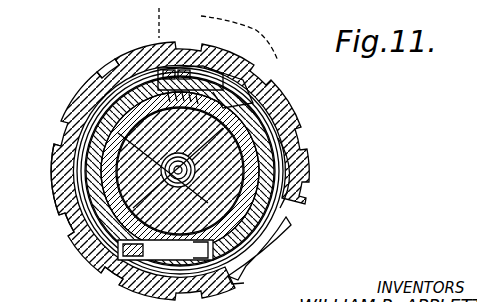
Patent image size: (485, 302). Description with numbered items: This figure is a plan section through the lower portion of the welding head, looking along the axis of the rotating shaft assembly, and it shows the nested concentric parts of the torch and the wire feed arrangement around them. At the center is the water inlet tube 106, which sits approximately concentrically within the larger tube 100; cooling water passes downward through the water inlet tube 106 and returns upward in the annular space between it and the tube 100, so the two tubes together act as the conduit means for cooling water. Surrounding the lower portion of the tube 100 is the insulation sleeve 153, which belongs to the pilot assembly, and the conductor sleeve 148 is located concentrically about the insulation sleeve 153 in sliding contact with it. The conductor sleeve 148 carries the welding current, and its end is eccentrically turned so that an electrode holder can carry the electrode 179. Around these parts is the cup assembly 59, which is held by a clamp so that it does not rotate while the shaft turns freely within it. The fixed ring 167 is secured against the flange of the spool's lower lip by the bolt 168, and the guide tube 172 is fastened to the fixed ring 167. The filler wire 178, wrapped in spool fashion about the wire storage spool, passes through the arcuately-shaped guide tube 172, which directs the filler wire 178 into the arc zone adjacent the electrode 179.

The tube 100 is at (168, 150).
The water inlet tube 106 is at (186, 146).
The conductor sleeve 148 is at (272, 210).
The insulation sleeve 153 is at (288, 170).
The cup assembly 59 is at (282, 190).
The fixed ring 167 is at (228, 87).
The bolt 168 is at (96, 268).
The guide tube 172 is at (288, 150).
The filler wire 178 is at (122, 72).
The electrode 179 is at (54, 190).